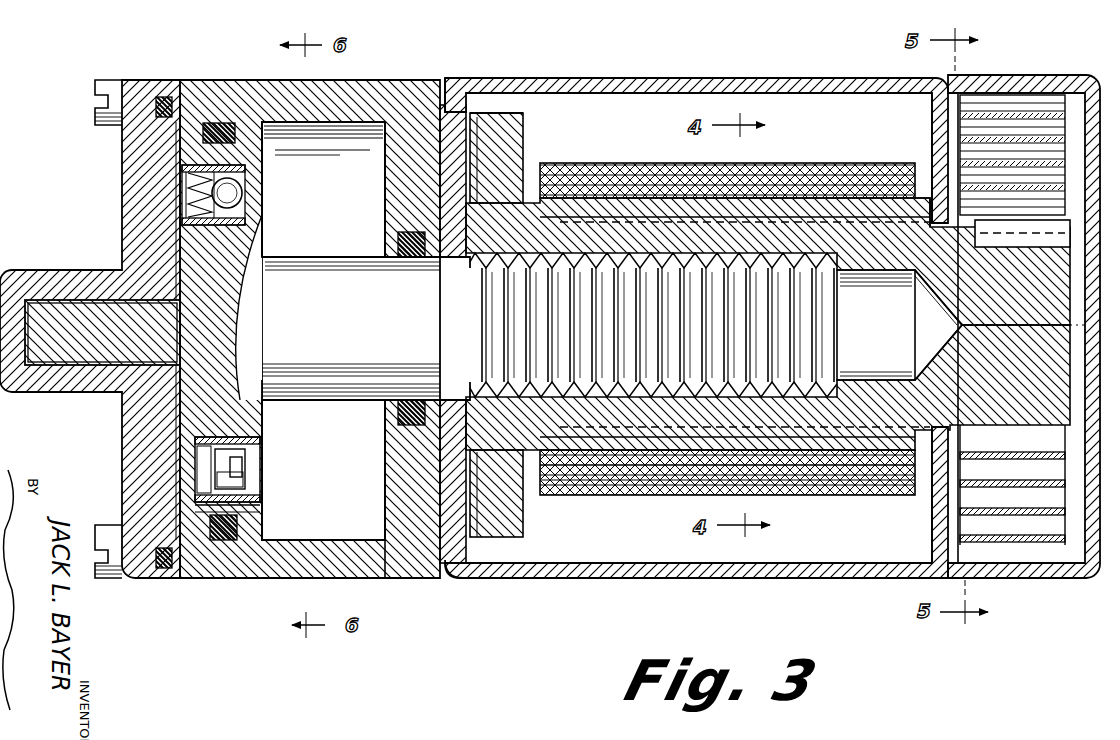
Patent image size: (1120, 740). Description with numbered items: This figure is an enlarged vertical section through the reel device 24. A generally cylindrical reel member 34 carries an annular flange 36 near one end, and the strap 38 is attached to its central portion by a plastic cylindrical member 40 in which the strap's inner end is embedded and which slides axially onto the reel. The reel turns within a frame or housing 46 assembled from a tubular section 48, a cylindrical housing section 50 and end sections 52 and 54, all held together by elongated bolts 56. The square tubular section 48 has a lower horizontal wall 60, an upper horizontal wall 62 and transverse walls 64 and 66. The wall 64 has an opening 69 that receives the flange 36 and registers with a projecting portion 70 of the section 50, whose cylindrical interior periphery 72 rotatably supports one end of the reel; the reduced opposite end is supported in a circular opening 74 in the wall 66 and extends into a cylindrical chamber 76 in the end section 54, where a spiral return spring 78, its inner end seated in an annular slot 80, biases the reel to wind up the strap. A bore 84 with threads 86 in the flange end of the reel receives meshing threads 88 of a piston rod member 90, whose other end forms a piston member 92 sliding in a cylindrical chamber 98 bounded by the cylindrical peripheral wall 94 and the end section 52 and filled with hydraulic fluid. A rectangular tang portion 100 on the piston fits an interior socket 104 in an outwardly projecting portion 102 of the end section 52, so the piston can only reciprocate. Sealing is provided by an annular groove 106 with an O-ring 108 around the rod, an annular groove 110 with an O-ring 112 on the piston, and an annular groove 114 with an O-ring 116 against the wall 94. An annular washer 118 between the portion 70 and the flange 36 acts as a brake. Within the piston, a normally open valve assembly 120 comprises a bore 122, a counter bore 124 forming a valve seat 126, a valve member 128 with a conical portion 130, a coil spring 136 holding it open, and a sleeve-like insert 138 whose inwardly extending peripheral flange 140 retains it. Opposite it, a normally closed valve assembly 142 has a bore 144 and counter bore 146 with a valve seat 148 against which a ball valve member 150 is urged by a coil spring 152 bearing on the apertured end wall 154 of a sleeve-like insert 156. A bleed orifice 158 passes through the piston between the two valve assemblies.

The reel device 24 is at (707, 76).
The reel member 34 is at (818, 472).
The annular flange 36 is at (523, 520).
The strap 38 is at (640, 495).
The plastic cylindrical member 40 is at (790, 195).
The frame or housing 46 is at (470, 580).
The tubular section 48 is at (722, 579).
The cylindrical housing section 50 is at (228, 78).
The end section 52 is at (130, 76).
The end section 54 is at (1052, 75).
The bolts 56 is at (95, 88).
The lower horizontal wall 60 is at (795, 578).
The upper horizontal wall 62 is at (815, 78).
The transverse wall 64 is at (495, 578).
The transverse wall 66 is at (936, 128).
The opening 69 is at (445, 78).
The projecting portion 70 is at (470, 112).
The cylindrical interior periphery 72 is at (500, 195).
The circular opening 74 is at (925, 200).
The cylindrical chamber 76 is at (1025, 578).
The spiral return spring 78 is at (992, 78).
The annular slot 80 is at (1005, 250).
The bore 84 is at (910, 372).
The threads 86 is at (838, 300).
The meshing threads 88 is at (495, 305).
The piston rod member 90 is at (333, 272).
The piston member 92 is at (262, 405).
The cylindrical peripheral wall 94 is at (345, 82).
The cylindrical chamber 98 is at (275, 560).
The tang portion 100 is at (40, 300).
The outwardly projecting portion 102 is at (176, 195).
The interior socket 104 is at (70, 392).
The annular groove 106 is at (398, 406).
The O-ring 108 is at (428, 398).
The annular groove 110 is at (270, 540).
The O-ring 112 is at (218, 540).
The annular groove 114 is at (160, 570).
The O-ring 116 is at (168, 580).
The annular washer 118 is at (522, 113).
The normally open valve assembly 120 is at (265, 468).
The bore 122 is at (195, 497).
The counter bore 124 is at (265, 492).
The valve seat 126 is at (195, 455).
The valve member 128 is at (235, 437).
The conical portion 130 is at (195, 470).
The coil spring 136 is at (195, 505).
The sleeve-like insert 138 is at (200, 518).
The inwardly extending peripheral flange 140 is at (262, 448).
The normally closed valve assembly 142 is at (280, 180).
The bore 144 is at (285, 195).
The counter bore 146 is at (264, 150).
The valve seat 148 is at (270, 160).
The ball valve member 150 is at (281, 189).
The coil spring 152 is at (190, 192).
The apertured end wall 154 is at (185, 170).
The sleeve-like insert 156 is at (182, 150).
The bleed orifice 158 is at (270, 325).